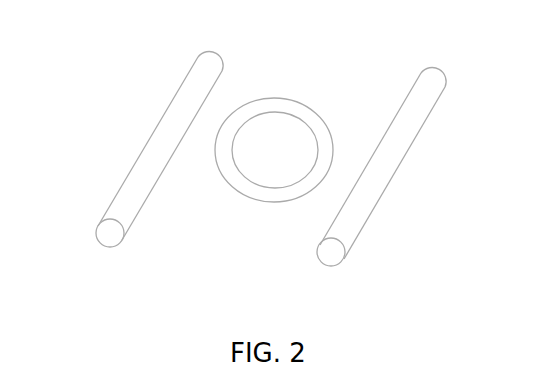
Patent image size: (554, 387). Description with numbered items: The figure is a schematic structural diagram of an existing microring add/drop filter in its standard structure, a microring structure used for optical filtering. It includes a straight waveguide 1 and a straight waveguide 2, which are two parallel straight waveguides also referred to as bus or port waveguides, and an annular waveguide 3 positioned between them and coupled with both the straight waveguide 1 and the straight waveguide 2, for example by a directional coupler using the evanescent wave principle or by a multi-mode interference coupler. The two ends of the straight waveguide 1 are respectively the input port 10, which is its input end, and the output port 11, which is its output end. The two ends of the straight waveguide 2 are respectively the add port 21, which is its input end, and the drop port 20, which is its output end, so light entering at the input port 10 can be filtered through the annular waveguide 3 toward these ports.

The straight waveguide 1 is at (413, 172).
The input port 10 is at (344, 259).
The output port 11 is at (448, 71).
The straight waveguide 2 is at (125, 139).
The drop port 20 is at (93, 228).
The add port 21 is at (197, 52).
The annular waveguide 3 is at (303, 98).